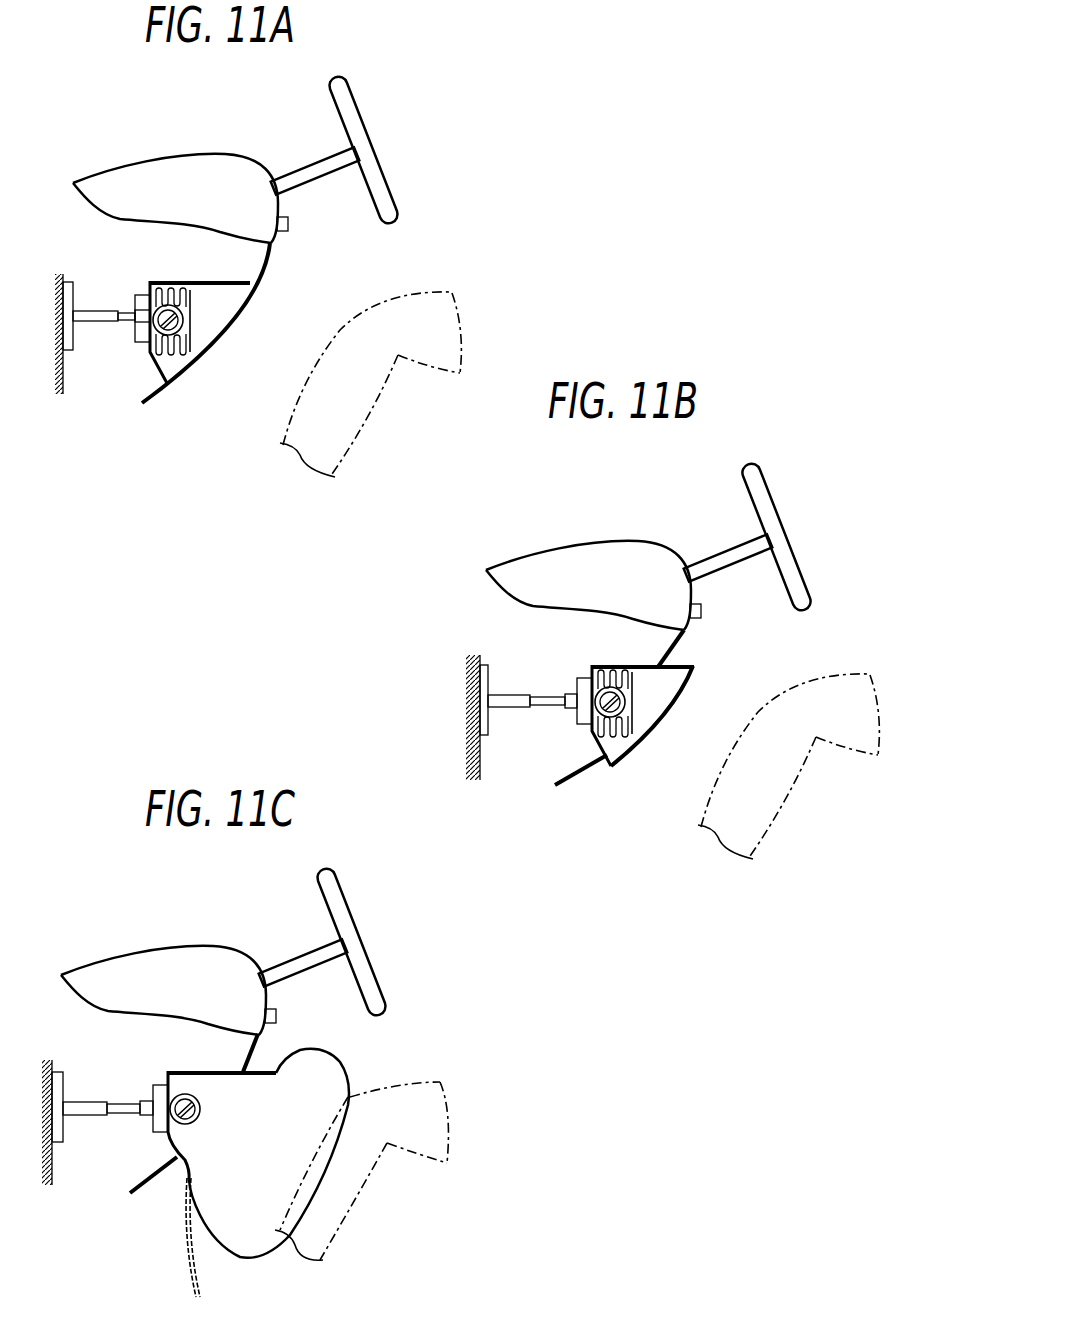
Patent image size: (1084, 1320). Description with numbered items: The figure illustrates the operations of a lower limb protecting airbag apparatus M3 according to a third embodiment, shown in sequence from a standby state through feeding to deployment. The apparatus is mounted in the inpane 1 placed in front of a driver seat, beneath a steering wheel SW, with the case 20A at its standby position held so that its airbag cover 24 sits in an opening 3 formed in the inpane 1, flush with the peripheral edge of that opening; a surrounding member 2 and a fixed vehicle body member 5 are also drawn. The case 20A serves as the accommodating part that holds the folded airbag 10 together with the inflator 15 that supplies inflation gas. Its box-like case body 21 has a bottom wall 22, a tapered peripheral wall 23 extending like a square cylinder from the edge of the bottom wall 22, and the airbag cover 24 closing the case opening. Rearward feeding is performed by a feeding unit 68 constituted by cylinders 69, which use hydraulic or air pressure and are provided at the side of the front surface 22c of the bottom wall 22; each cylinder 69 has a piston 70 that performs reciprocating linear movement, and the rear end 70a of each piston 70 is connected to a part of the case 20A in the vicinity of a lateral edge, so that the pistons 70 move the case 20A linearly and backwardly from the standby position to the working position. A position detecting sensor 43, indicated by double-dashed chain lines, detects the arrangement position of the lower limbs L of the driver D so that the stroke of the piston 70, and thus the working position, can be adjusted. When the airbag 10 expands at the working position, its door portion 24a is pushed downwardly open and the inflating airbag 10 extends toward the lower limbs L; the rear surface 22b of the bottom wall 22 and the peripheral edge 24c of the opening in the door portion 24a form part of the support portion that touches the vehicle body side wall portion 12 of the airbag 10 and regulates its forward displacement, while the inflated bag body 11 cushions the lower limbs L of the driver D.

In FIG. 11A, the inpane 1 is at (228, 164).
In FIG. 11A, the steering wheel SW is at (390, 134).
In FIG. 11A, the frame member 2 is at (305, 243).
In FIG. 11B, the opening 3 is at (662, 668).
In FIG. 11A, the vehicle body wall 5 is at (62, 276).
In FIG. 11A, the position detecting sensor 43 is at (292, 224).
In FIG. 11A, the feeding unit 68 is at (112, 299).
In FIG. 11B, the feeding unit 68 is at (509, 702).
In FIG. 11C, the feeding unit 68 is at (93, 1134).
In FIG. 11A, the cylinder 69 is at (95, 323).
In FIG. 11B, the cylinder 69 is at (515, 708).
In FIG. 11A, the piston 70 is at (125, 320).
In FIG. 11B, the piston 70 is at (548, 698).
In FIG. 11A, the rear end 70a is at (143, 330).
In FIG. 11B, the rear end 70a is at (585, 680).
In FIG. 11A, the case 20A is at (210, 238).
In FIG. 11B, the case 20A is at (697, 650).
In FIG. 11A, the front surface 22c is at (150, 283).
In FIG. 11A, the airbag 10 is at (188, 302).
In FIG. 11B, the airbag 10 is at (632, 713).
In FIG. 11A, the inflator 15 is at (183, 323).
In FIG. 11B, the inflator 15 is at (622, 700).
In FIG. 11C, the inflator 15 is at (195, 1125).
In FIG. 11A, the lower limb protecting airbag apparatus M3 is at (118, 478).
In FIG. 11B, the case body 21 is at (598, 738).
In FIG. 11B, the bottom wall 22 is at (578, 725).
In FIG. 11C, the bottom wall 22 is at (167, 1073).
In FIG. 11C, the rear surface 22b is at (177, 1073).
In FIG. 11B, the peripheral wall 23 is at (702, 677).
In FIG. 11B, the airbag cover 24 is at (646, 756).
In FIG. 11C, the door portion 24a is at (186, 1240).
In FIG. 11C, the peripheral edge 24c is at (278, 1088).
In FIG. 11C, the airbag body 11 is at (266, 1143).
In FIG. 11C, the vehicle body side wall portion 12 is at (290, 1050).
In FIG. 11C, the driver D is at (436, 1068).
In FIG. 11C, the lower limbs L is at (354, 1210).